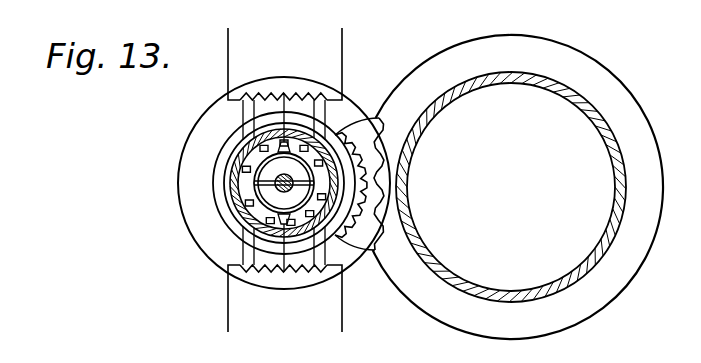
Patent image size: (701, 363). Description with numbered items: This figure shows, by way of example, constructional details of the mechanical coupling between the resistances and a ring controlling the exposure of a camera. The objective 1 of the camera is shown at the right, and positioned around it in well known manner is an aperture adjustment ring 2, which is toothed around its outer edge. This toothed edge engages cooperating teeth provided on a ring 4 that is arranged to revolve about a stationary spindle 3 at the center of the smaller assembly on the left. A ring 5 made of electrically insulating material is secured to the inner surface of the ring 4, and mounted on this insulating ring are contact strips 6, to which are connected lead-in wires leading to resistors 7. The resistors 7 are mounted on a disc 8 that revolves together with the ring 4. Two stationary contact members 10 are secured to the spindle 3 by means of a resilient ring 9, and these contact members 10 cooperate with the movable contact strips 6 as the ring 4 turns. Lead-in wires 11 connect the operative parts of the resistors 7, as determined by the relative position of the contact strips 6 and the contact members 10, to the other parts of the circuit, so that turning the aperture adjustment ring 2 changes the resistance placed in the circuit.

The objective 1 is at (607, 231).
The aperture adjustment ring 2 is at (610, 95).
The stationary spindle 3 is at (180, 158).
The ring 4 is at (222, 168).
The ring of electrically insulating material 5 is at (235, 150).
The contact strips 6 is at (345, 145).
The resistors 7 is at (285, 106).
The disc 8 is at (318, 84).
The resilient ring 9 is at (233, 182).
The stationary contact members 10 is at (328, 140).
The lead-in wires 11 is at (230, 43).